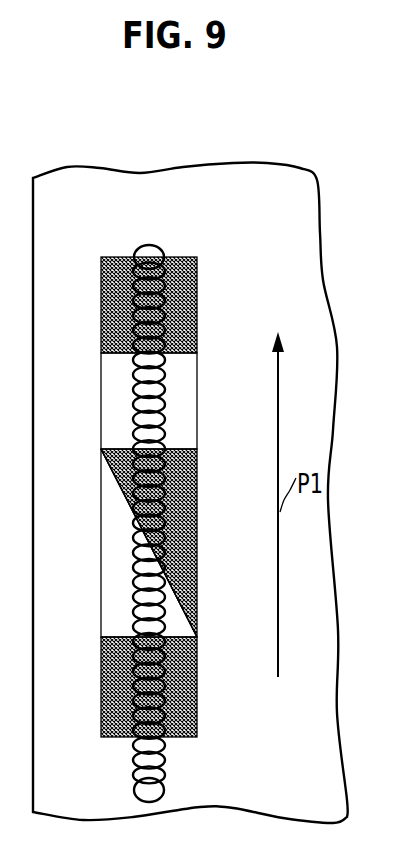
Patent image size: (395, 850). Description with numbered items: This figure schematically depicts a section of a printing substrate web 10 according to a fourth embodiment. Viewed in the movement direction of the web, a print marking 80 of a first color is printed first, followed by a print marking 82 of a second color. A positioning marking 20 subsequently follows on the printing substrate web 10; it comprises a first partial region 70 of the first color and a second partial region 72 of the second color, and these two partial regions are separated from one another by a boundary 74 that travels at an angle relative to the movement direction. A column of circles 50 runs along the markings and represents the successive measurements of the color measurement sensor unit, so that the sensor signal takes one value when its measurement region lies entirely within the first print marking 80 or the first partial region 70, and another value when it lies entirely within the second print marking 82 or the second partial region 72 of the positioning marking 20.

The printing substrate web 10 is at (247, 173).
The positioning marking 20 is at (153, 472).
The circles 50 is at (147, 245).
The first partial region 70 is at (185, 500).
The second partial region 72 is at (108, 543).
The boundary 74 is at (124, 498).
The print marking 80 is at (197, 258).
The print marking 82 is at (183, 408).